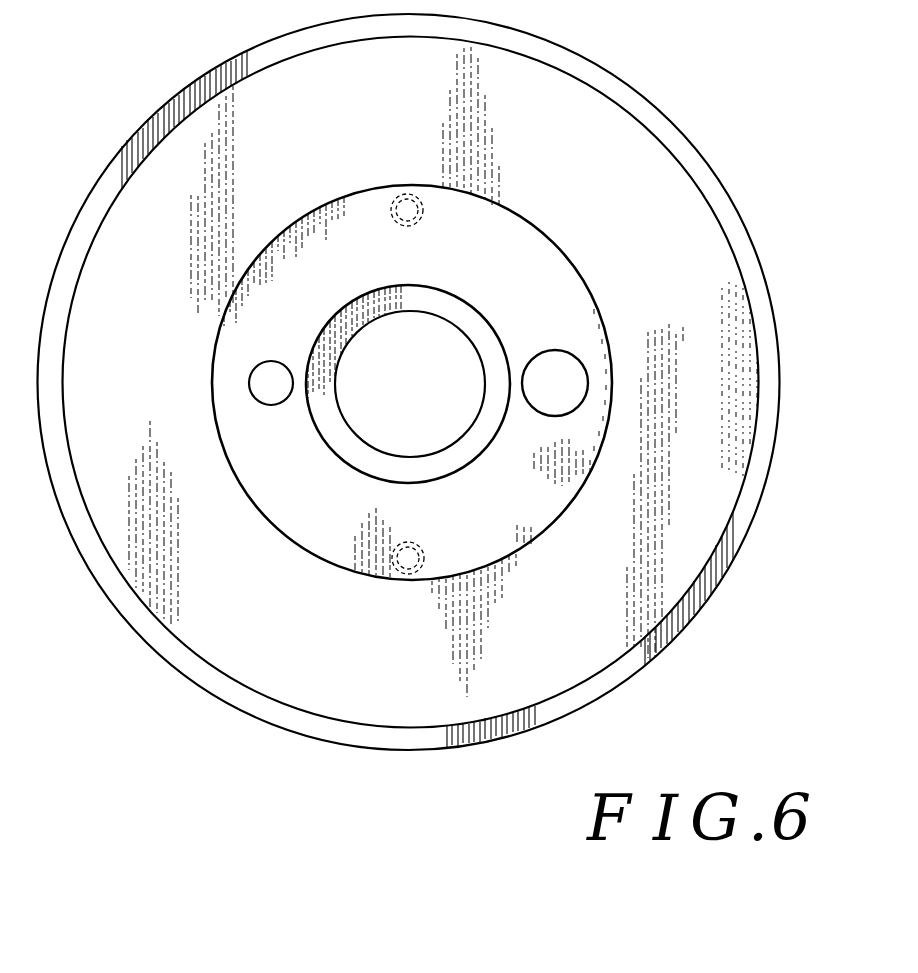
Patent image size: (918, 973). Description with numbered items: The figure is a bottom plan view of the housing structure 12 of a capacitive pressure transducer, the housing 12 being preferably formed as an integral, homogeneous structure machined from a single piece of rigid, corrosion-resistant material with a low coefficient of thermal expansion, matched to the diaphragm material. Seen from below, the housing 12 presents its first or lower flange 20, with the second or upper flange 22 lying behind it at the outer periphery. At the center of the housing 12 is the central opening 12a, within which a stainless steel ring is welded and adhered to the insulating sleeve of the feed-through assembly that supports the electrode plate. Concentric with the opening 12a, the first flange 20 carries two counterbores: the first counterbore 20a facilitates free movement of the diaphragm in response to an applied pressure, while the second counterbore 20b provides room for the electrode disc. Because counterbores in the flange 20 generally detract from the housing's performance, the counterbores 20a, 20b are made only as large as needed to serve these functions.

The housing structure 12 is at (653, 89).
The central opening 12a is at (436, 350).
The first flange 20 is at (650, 167).
The first counterbore 20a is at (513, 254).
The second counterbore 20b is at (488, 350).
The second flange 22 is at (716, 191).